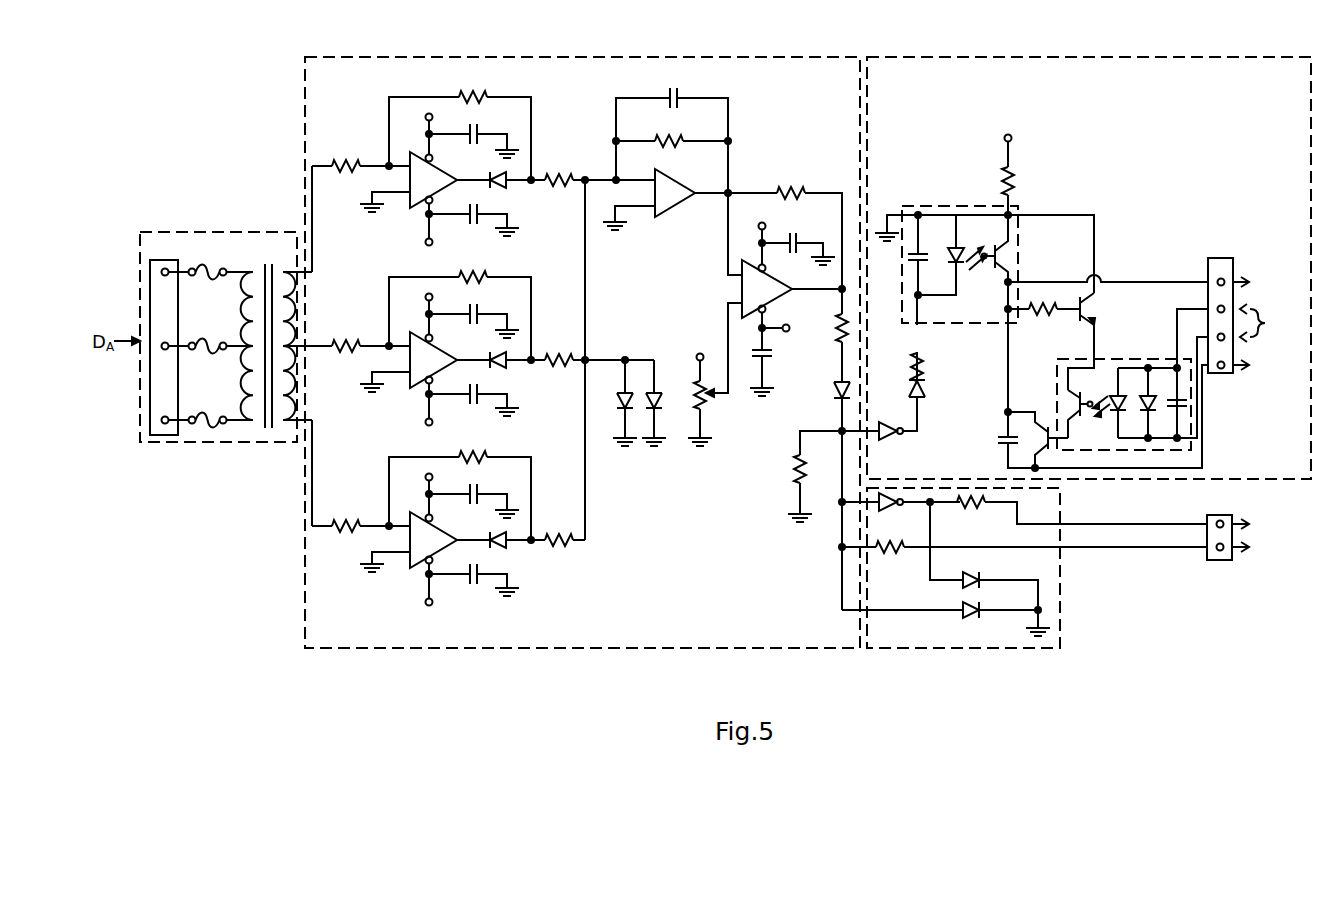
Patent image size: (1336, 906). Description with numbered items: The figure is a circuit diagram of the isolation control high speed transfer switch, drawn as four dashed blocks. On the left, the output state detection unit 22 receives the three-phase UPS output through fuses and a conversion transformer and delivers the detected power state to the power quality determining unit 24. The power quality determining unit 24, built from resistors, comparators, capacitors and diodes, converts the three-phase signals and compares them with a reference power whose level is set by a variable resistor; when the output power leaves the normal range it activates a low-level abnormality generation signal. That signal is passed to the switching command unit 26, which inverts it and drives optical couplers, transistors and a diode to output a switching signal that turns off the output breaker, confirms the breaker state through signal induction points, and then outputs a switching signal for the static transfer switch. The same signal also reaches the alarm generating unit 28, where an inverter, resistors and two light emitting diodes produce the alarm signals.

The output state detection unit 22 is at (219, 232).
The power quality determining unit 24 is at (580, 57).
The switching command unit 26 is at (1086, 57).
The alarm generating unit 28 is at (1060, 600).